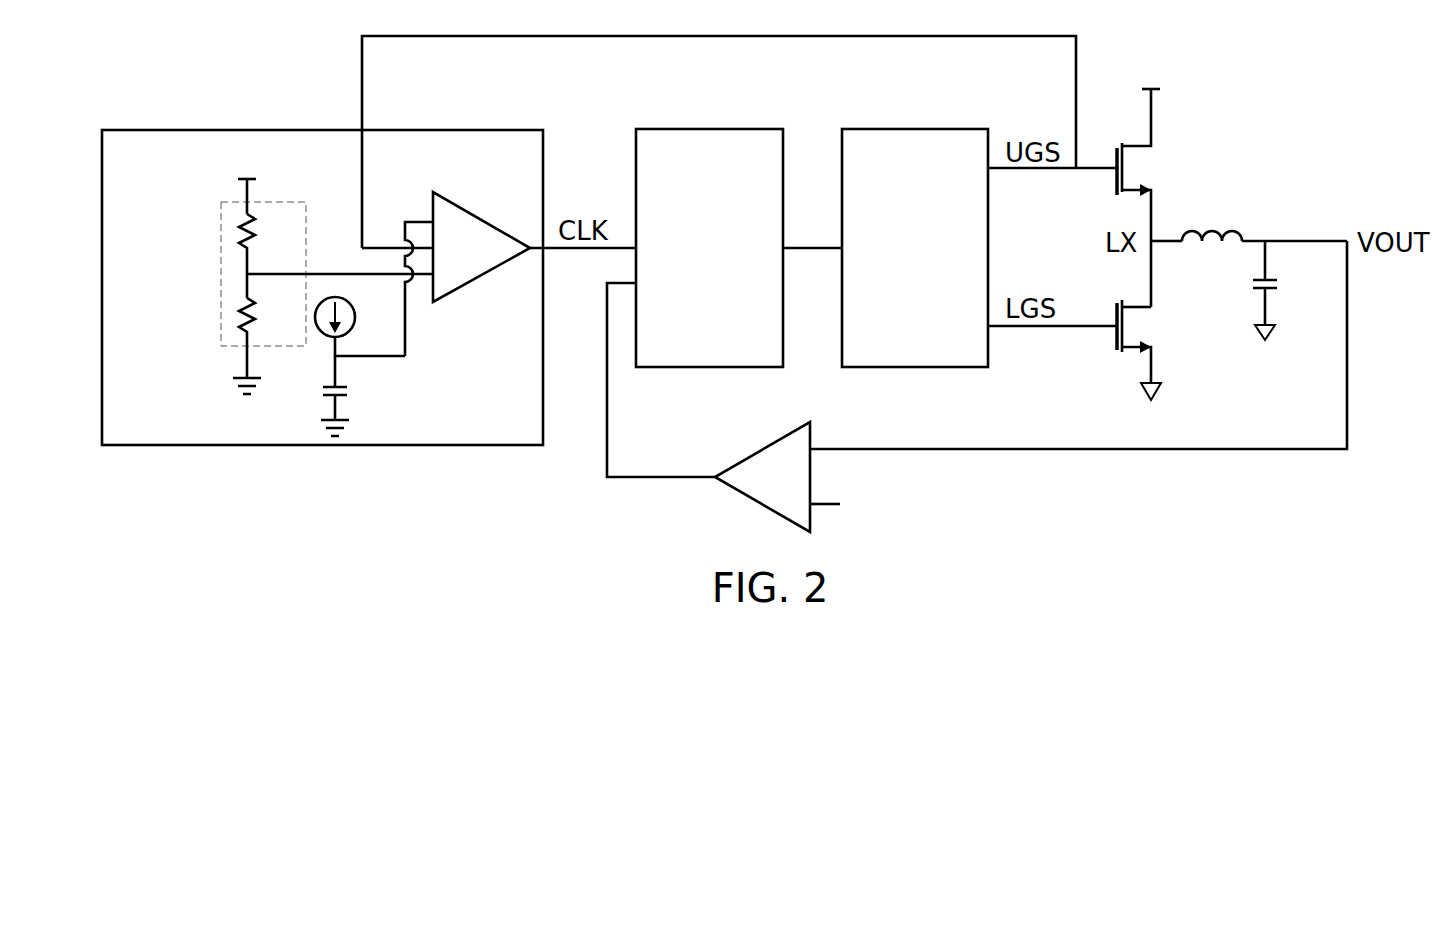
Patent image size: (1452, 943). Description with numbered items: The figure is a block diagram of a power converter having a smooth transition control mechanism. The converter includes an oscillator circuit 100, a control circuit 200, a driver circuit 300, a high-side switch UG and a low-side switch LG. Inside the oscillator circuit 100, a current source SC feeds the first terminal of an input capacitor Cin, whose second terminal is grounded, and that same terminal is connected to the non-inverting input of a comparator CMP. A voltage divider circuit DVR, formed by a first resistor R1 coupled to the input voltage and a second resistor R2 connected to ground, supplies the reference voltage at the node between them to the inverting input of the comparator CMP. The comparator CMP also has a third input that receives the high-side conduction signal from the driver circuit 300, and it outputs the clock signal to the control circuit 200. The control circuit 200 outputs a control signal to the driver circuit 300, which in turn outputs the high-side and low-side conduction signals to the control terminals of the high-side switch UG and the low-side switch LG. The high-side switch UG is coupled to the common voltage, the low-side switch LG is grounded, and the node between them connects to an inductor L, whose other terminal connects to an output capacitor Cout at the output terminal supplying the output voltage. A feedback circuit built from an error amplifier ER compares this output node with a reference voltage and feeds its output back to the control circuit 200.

The oscillator circuit 100 is at (310, 130).
The control circuit 200 is at (710, 129).
The driver circuit 300 is at (915, 129).
The voltage divider circuit DVR is at (273, 271).
The first resistor R1 is at (268, 233).
The second resistor R2 is at (268, 316).
The current source SC is at (374, 289).
The input capacitor Cin is at (357, 396).
The comparator CMP is at (486, 221).
The high-side switch UG is at (1140, 181).
The low-side switch LG is at (1132, 334).
The inductor L is at (1264, 221).
The output capacitor Cout is at (1298, 290).
The error amplifier ER is at (762, 500).